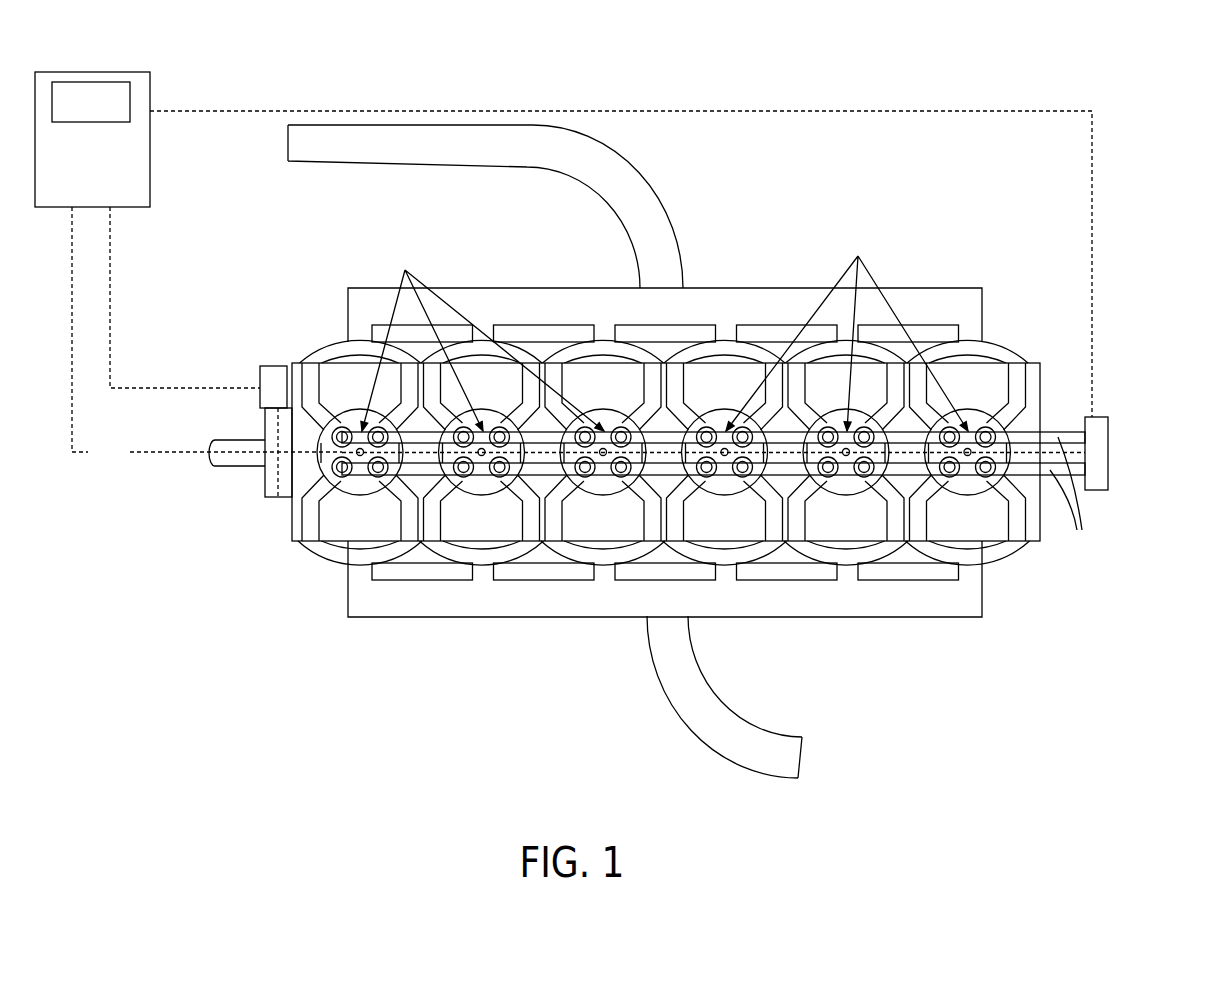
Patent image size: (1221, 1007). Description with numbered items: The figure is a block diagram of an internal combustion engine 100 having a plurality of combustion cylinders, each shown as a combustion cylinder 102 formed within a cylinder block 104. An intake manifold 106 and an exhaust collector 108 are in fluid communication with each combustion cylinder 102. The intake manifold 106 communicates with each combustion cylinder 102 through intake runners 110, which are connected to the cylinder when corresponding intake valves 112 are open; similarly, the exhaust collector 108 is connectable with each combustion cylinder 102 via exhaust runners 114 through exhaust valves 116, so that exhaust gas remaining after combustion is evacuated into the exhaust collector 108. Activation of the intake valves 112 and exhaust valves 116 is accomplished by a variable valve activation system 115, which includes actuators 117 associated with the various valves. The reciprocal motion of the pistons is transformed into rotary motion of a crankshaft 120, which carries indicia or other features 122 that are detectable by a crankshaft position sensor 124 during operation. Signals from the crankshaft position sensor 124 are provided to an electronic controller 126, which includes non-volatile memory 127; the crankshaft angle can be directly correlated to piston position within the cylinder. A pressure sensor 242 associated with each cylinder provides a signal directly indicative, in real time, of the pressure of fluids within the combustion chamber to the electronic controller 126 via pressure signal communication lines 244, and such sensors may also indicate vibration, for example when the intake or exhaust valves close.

The engine 100 is at (1151, 229).
The combustion cylinder 102 is at (360, 482).
The cylinder block 104 is at (1040, 535).
The intake manifold 106 is at (748, 300).
The exhaust collector 108 is at (828, 606).
The intake runners 110 is at (311, 382).
The intake valves 112 is at (388, 470).
The exhaust runners 114 is at (312, 525).
The variable valve activation system 115 is at (1108, 484).
The exhaust valves 116 is at (340, 477).
The actuators 117 is at (1086, 489).
The crankshaft 120 is at (279, 500).
The indicia or other features 122 is at (268, 470).
The crankshaft position sensor 124 is at (262, 365).
The electronic controller 126 is at (105, 152).
The non-volatile memory 127 is at (108, 113).
The pressure sensor 242 is at (405, 270).
The pressure signal communication lines 244 is at (207, 336).